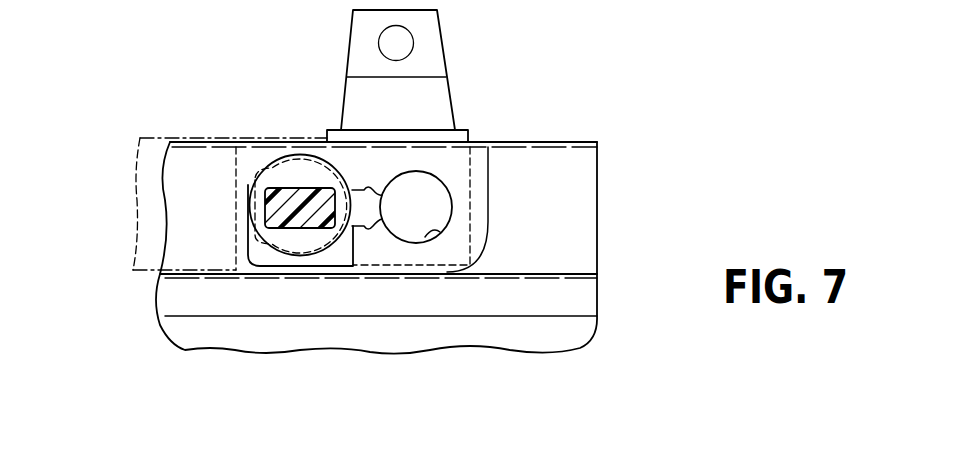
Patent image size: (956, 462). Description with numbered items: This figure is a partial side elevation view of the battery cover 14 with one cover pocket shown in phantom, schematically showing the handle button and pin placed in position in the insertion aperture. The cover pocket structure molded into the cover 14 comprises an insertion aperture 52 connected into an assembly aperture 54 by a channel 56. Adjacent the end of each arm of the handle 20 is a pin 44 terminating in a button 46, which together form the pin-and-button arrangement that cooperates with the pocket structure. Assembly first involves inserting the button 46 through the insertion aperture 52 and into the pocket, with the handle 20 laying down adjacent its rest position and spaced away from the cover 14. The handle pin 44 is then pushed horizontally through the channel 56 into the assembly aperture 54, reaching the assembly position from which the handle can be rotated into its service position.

The cover 14 is at (583, 207).
The handle 20 is at (135, 157).
The pin 44 is at (303, 220).
The button 46 is at (293, 157).
The insertion aperture 52 is at (257, 258).
The assembly aperture 54 is at (427, 236).
The channel 56 is at (392, 207).